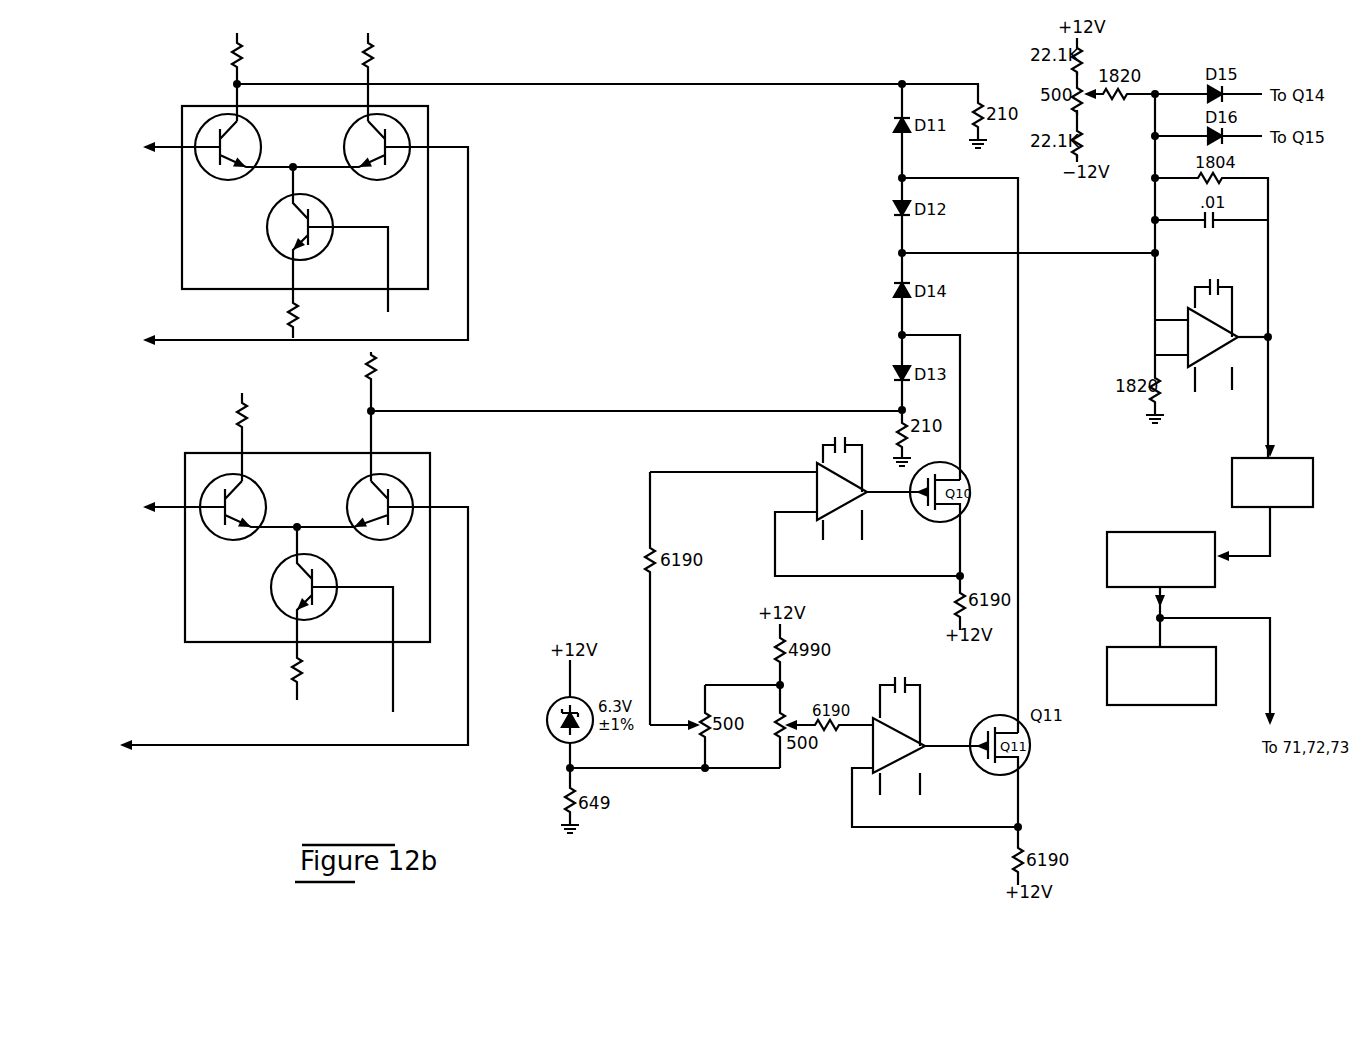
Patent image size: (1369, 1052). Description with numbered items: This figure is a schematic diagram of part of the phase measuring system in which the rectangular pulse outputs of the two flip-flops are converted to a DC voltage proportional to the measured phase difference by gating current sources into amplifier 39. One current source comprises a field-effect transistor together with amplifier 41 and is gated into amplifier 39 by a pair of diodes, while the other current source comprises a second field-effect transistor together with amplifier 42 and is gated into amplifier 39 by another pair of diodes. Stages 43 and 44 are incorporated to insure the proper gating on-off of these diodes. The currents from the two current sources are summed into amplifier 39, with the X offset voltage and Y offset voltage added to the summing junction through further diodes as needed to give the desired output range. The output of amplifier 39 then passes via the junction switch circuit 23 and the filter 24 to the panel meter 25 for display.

The stage 43 is at (182, 264).
The stage 44 is at (168, 577).
The amplifier 41 is at (816, 489).
The amplifier 42 is at (874, 743).
The amplifier 39 is at (1178, 333).
The function switching circuits 23 is at (1230, 484).
The filter 24 is at (1158, 532).
The panel meter 25 is at (1140, 647).